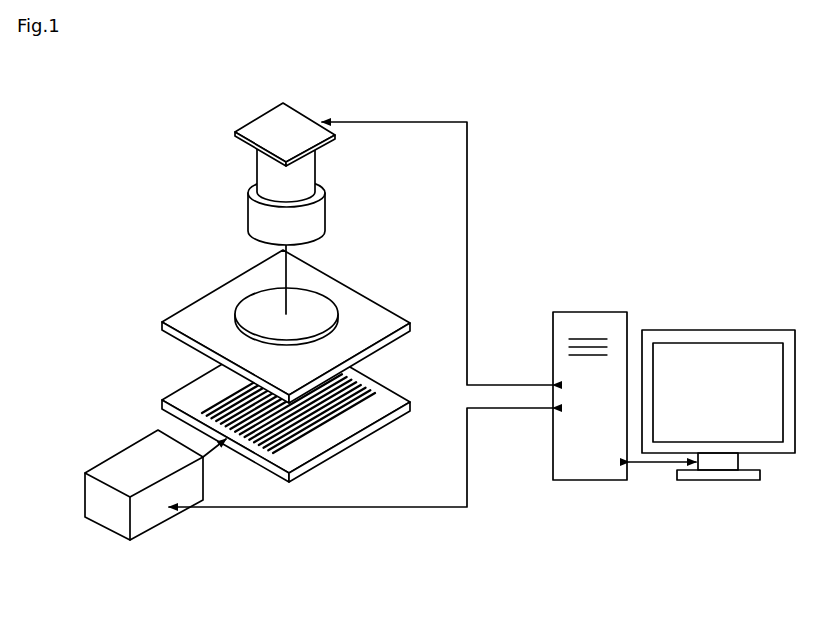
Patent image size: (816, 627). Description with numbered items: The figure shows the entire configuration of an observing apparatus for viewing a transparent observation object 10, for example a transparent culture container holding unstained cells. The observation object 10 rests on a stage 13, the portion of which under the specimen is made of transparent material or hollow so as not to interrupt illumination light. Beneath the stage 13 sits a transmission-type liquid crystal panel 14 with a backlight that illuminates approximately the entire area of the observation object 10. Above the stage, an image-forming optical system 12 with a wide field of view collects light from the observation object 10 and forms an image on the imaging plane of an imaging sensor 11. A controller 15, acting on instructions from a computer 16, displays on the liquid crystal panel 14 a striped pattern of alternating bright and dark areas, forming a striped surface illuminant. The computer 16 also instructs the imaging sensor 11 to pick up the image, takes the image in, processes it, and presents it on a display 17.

The observation object 10 is at (323, 300).
The imaging sensor 11 is at (270, 117).
The image-forming optical system 12 is at (236, 184).
The stage 13 is at (208, 300).
The transmission-type liquid crystal panel 14 is at (183, 393).
The controller 15 is at (128, 458).
The computer 16 is at (588, 317).
The display 17 is at (712, 333).